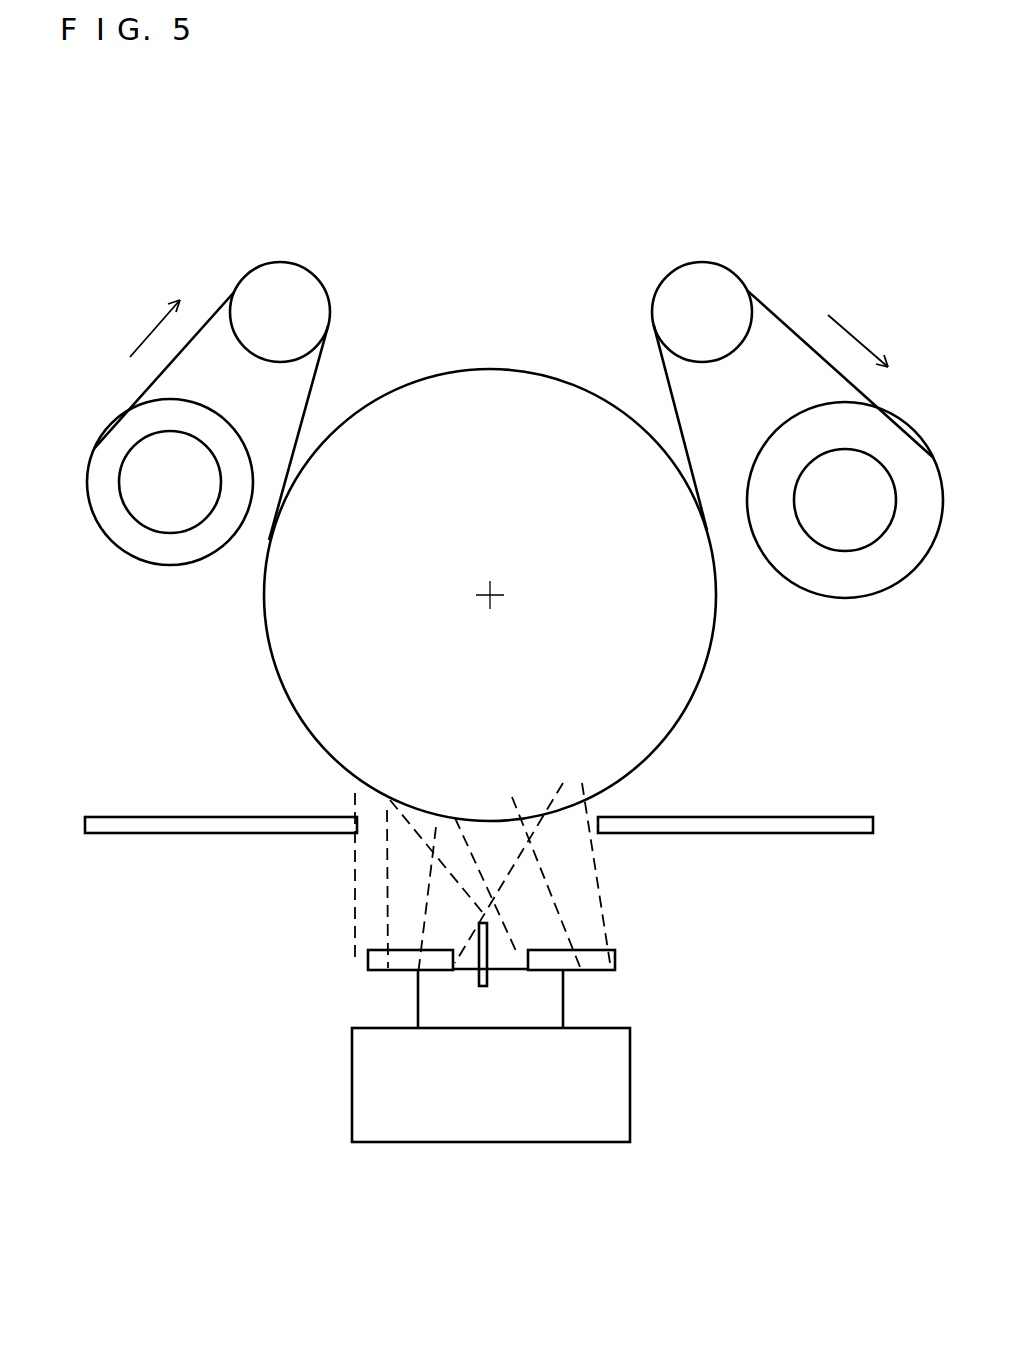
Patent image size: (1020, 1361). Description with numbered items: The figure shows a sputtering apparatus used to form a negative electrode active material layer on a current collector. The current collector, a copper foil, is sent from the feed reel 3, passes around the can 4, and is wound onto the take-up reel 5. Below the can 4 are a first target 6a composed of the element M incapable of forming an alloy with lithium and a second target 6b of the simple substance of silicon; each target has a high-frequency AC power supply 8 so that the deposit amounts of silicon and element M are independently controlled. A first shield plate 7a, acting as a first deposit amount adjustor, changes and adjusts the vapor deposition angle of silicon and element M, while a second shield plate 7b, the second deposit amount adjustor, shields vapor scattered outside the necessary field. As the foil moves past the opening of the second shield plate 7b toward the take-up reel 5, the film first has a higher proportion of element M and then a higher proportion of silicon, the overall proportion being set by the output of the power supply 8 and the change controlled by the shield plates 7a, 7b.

The feed reel 3 is at (845, 533).
The can 4 is at (485, 405).
The take-up reel 5 is at (162, 513).
The first target 6a is at (615, 962).
The second target 6b is at (368, 960).
The first shield plate 7a is at (488, 985).
The second shield plate 7b is at (143, 825).
The high-frequency AC power supply 8 is at (377, 1083).